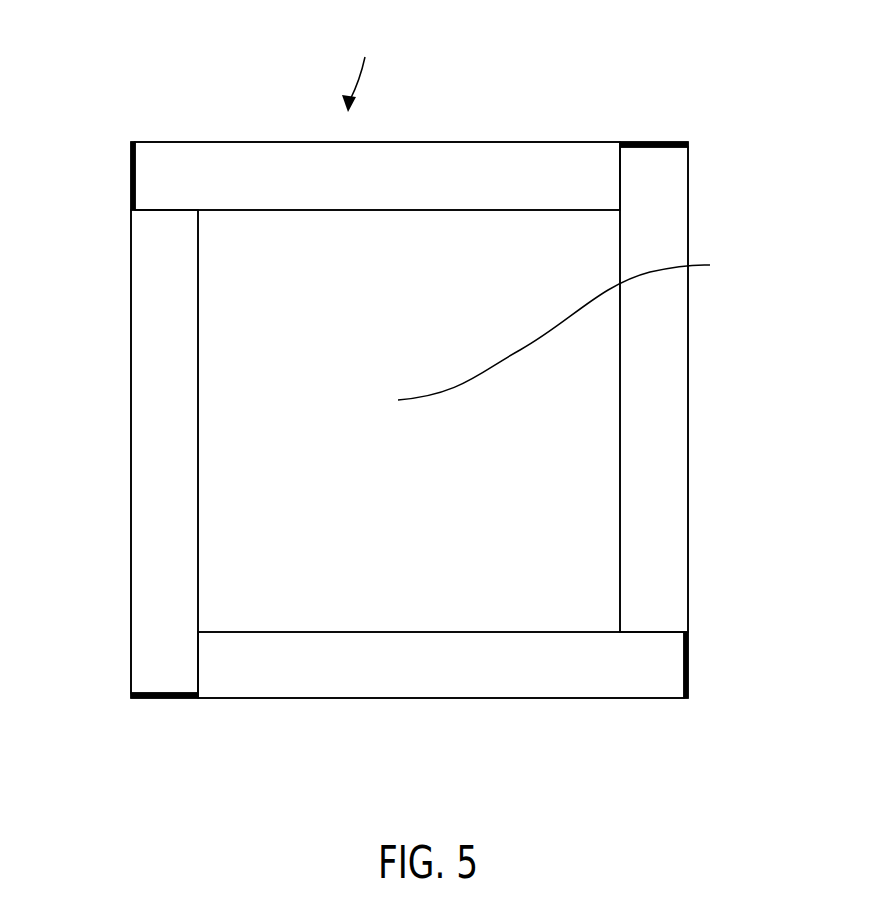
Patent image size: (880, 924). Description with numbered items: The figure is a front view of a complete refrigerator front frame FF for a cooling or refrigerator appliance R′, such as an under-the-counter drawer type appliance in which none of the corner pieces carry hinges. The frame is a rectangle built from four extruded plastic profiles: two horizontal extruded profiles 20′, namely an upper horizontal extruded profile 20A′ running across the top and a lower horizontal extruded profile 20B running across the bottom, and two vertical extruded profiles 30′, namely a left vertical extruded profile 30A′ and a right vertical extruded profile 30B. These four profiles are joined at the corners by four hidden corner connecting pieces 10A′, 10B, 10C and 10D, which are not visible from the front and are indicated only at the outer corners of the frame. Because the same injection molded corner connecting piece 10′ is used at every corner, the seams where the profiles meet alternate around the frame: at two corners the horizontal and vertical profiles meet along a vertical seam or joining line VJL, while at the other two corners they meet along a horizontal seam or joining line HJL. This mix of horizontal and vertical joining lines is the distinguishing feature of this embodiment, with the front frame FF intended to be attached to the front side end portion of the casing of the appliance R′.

The injection molded corner connecting piece 10′ is at (130, 188).
The hidden corner connecting piece 10A′ is at (133, 158).
The hidden corner connecting piece 10B is at (657, 142).
The hidden corner connecting piece 10C is at (688, 668).
The hidden corner connecting piece 10D is at (172, 698).
The horizontal extruded profile 20′ is at (460, 163).
The horizontal extruded profile 20A′ is at (483, 187).
The horizontal extruded profile 20B is at (452, 648).
The vertical extruded profile 30′ is at (157, 362).
The vertical extruded profile 30A′ is at (190, 452).
The vertical extruded profile 30B is at (648, 462).
The vertical seam or joining line VJL is at (620, 185).
The horizontal seam or joining line HJL is at (175, 210).
The cooling or refrigerator appliance R′ is at (563, 323).
The refrigerator front frame FF is at (359, 67).